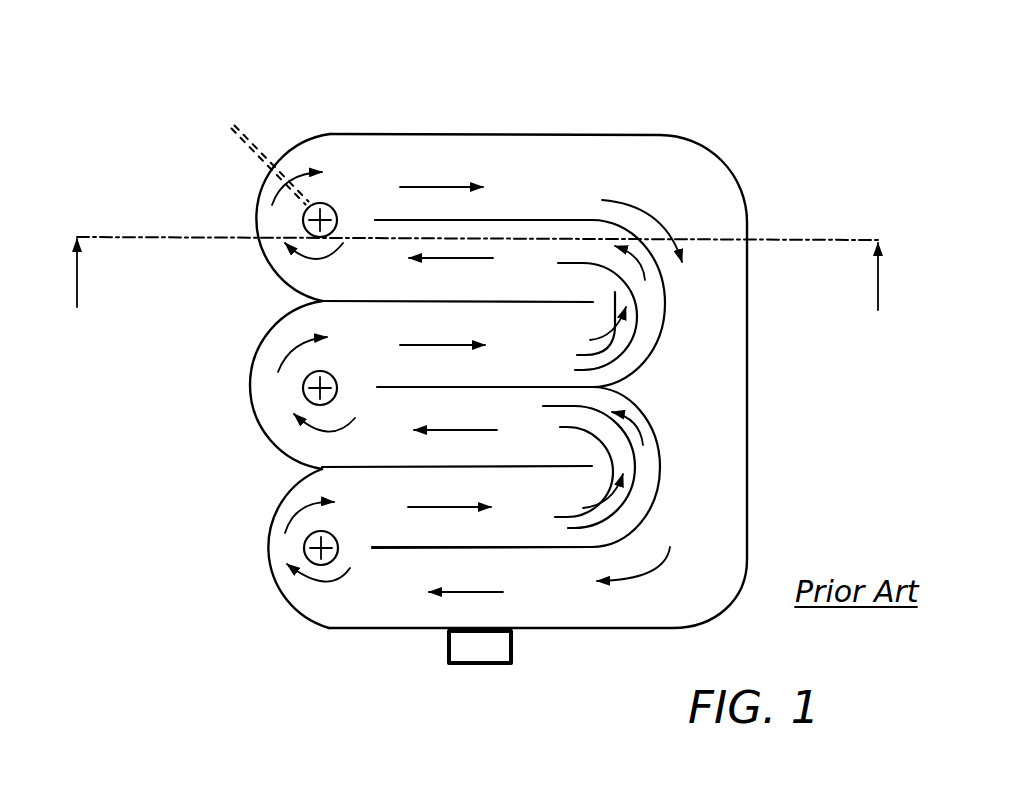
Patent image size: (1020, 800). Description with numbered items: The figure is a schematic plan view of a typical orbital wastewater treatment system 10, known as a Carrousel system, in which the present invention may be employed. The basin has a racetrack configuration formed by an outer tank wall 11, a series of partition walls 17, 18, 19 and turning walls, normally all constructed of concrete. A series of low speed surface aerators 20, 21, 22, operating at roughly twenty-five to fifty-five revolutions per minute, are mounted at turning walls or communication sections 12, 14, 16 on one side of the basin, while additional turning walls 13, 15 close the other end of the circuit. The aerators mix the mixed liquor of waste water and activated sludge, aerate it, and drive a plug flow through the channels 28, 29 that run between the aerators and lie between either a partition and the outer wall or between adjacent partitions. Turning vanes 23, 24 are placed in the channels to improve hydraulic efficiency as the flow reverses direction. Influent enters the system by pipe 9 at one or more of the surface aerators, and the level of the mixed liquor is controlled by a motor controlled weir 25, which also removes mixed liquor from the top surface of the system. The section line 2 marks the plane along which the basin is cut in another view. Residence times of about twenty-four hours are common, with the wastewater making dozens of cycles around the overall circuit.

The section line 2- 2 is at (474, 273).
The pipe 9 is at (253, 140).
The orbital system 10 is at (277, 458).
The outer tank wall 11 is at (658, 135).
The turning wall 12 is at (261, 263).
The additional turning wall 13 is at (646, 359).
The turning wall 14 is at (247, 373).
The additional turning wall 15 is at (660, 470).
The turning wall 16 is at (250, 552).
The partition wall 17 is at (520, 220).
The partition wall 18 is at (392, 387).
The partition wall 19 is at (390, 548).
The surface aerator 20 is at (330, 204).
The surface aerator 21 is at (306, 386).
The surface aerator 22 is at (303, 545).
The turning vane 23 is at (615, 292).
The turning vane 24 is at (640, 337).
The motor controlled weir 25 is at (470, 666).
The channel 28 is at (497, 274).
The channel 29 is at (476, 511).